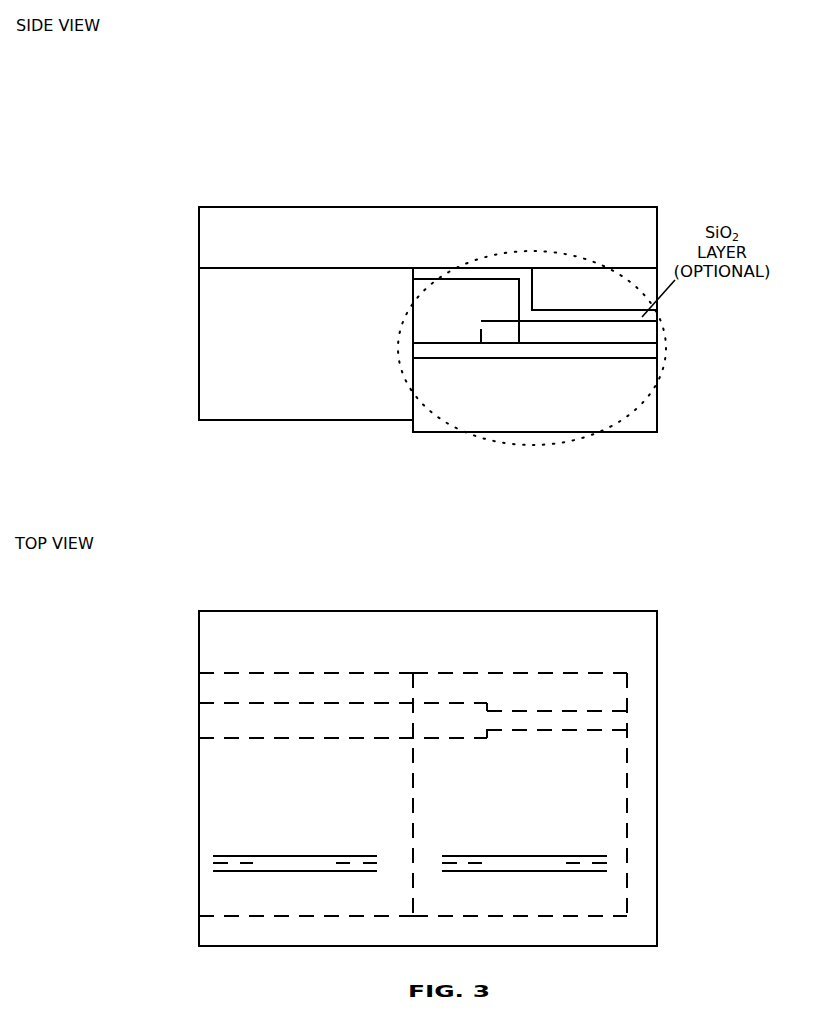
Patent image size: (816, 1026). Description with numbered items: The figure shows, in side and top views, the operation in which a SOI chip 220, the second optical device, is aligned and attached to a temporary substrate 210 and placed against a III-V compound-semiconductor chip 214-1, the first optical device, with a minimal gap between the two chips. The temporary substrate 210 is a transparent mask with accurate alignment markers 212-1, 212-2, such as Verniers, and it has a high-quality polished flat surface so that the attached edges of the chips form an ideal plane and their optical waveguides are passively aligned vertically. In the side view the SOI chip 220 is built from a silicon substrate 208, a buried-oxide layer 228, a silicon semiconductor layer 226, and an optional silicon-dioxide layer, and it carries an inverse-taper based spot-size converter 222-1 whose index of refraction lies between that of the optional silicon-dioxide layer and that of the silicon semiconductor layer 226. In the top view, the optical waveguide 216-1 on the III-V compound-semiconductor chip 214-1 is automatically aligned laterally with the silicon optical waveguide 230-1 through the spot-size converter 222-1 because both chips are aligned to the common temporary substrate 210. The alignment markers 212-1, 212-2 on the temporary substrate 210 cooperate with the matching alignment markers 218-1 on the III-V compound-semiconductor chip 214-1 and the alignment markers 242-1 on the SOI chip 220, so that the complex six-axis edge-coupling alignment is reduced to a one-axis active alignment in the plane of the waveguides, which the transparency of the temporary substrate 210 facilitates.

The temporary substrate 210 is at (236, 656).
The III-V compound-semiconductor chip 214-1 is at (283, 833).
The SOI chip 220 is at (505, 822).
The silicon substrate 208 is at (518, 415).
The buried-oxide layer 228 is at (505, 350).
The silicon semiconductor layer 226 is at (566, 333).
The spot-size converter 222-1 is at (450, 722).
The optical waveguide 216-1 is at (255, 722).
The optical waveguide 230-1 is at (565, 723).
The alignment markers 212-1 is at (237, 871).
The alignment markers 218-1 is at (240, 863).
The alignment markers 212-2 is at (587, 856).
The alignment markers 242-1 is at (483, 863).